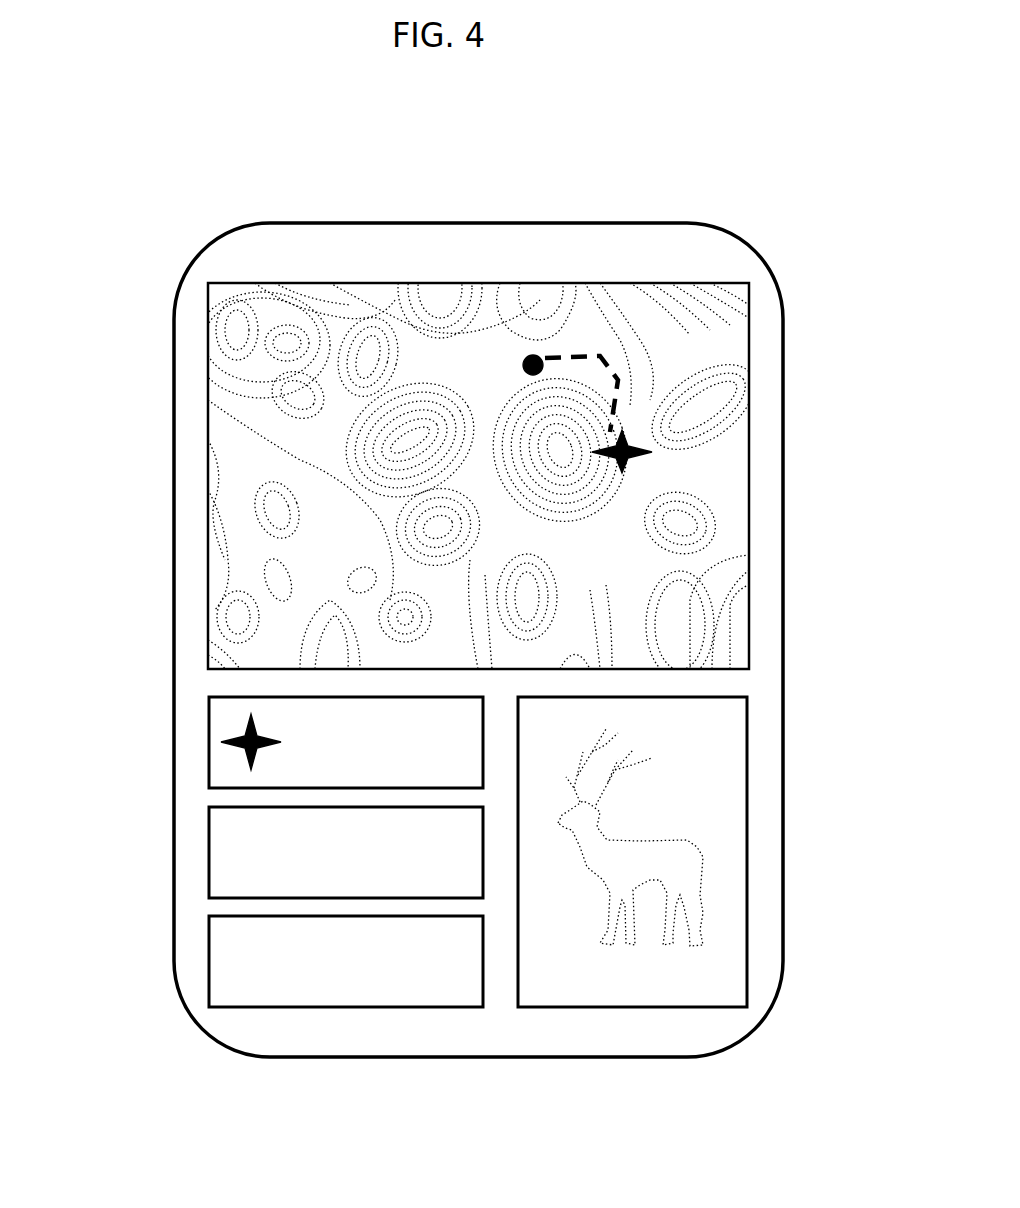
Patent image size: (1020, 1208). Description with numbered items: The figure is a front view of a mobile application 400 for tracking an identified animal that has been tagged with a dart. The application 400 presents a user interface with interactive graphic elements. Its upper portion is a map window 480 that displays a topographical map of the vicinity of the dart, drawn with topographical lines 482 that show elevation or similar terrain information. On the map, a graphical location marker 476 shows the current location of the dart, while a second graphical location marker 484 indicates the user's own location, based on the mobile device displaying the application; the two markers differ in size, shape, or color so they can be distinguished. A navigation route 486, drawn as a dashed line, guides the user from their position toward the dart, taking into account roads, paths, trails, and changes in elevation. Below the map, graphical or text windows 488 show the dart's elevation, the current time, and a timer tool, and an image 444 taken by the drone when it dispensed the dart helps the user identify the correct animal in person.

The mobile application 400 is at (635, 140).
The map window 480 is at (331, 283).
The topographical lines 482 is at (222, 407).
The second graphical location marker 484 is at (535, 335).
The navigation route 486 is at (627, 365).
The graphical location marker 476 is at (637, 467).
The graphical or text windows 488 is at (208, 837).
The image 444 is at (737, 738).